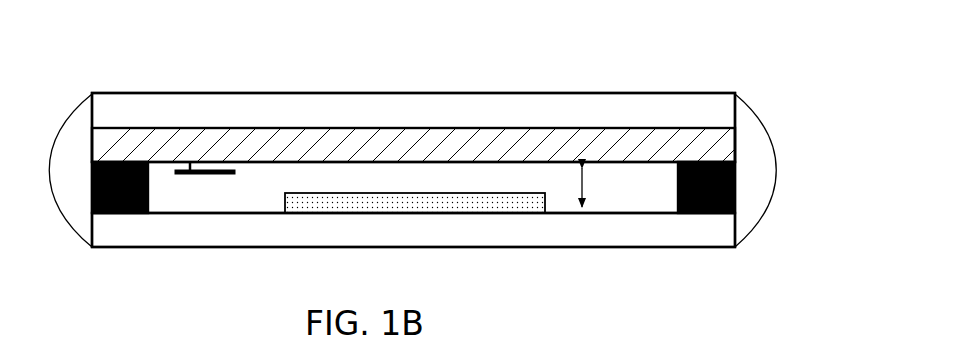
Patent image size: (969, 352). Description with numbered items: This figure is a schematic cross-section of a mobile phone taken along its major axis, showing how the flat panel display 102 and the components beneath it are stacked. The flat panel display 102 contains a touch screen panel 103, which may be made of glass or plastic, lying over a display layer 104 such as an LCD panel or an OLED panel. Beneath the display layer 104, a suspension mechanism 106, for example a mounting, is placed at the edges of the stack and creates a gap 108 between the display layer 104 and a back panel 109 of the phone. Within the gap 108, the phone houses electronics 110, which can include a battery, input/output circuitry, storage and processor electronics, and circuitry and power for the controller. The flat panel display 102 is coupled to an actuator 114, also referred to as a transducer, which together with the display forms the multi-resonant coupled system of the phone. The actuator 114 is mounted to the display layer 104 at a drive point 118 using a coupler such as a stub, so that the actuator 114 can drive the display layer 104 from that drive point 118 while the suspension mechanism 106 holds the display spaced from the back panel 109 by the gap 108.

The flat panel display 102 is at (77, 94).
The touch screen panel 103 is at (740, 120).
The display layer 104 is at (740, 145).
The suspension mechanism 106 is at (740, 193).
The gap 108 is at (593, 192).
The back panel 109 is at (465, 237).
The electronics 110 is at (298, 210).
The actuator 114 is at (208, 178).
The drive point 118 is at (193, 158).